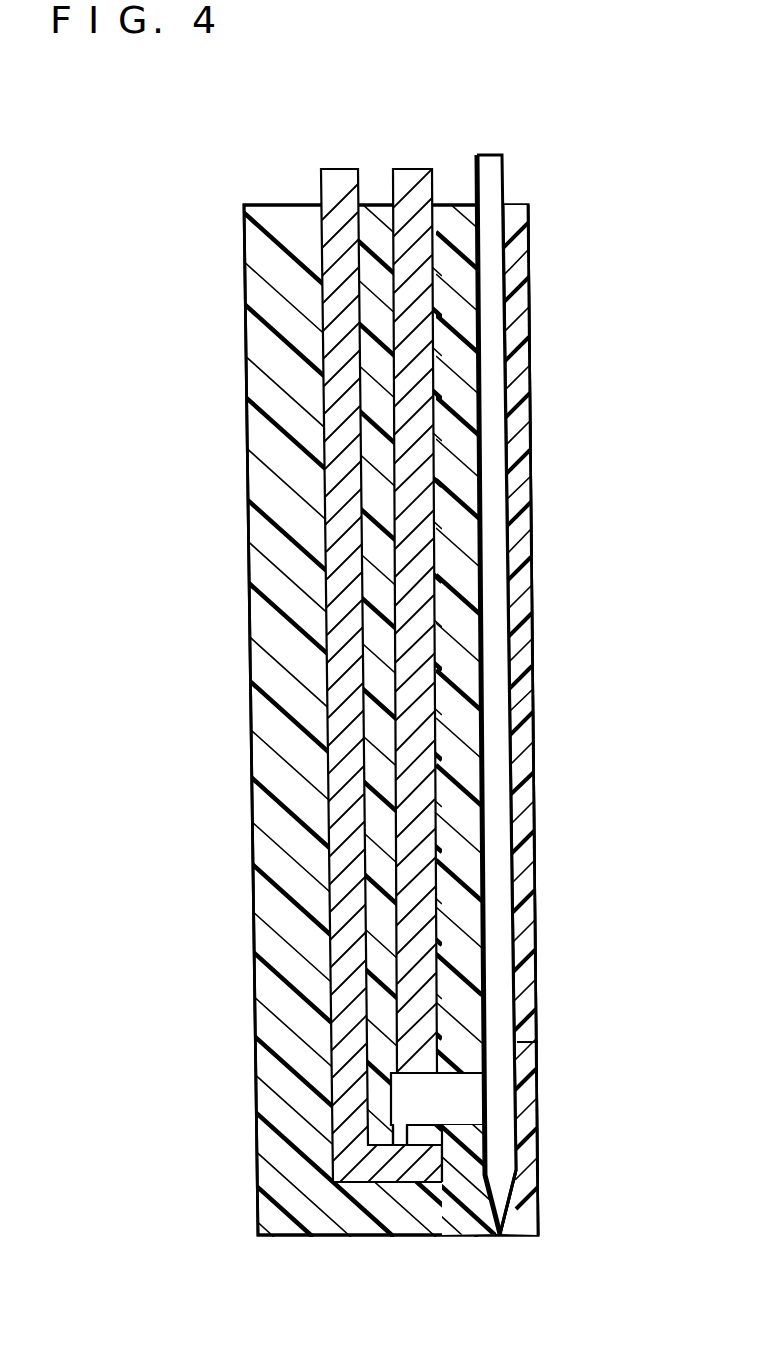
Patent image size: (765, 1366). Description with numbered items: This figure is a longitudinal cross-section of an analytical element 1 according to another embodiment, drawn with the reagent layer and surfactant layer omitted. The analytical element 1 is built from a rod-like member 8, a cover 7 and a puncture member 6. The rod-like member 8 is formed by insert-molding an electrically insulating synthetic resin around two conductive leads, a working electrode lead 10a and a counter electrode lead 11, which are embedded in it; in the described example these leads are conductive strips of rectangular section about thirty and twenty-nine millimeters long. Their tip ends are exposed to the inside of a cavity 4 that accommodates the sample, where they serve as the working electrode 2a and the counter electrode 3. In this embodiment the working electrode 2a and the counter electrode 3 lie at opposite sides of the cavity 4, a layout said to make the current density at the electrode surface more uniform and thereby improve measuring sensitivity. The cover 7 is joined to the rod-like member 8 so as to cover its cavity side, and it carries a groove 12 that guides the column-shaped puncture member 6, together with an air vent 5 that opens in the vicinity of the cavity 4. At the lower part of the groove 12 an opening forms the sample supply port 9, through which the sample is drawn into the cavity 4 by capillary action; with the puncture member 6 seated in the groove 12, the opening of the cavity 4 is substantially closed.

The analytical element 1 is at (226, 302).
The terminal connection portion 2a is at (427, 1125).
The counter electrode 3 is at (423, 1076).
The cavity 4 is at (463, 1113).
The air vent 5 is at (528, 1042).
The puncture member 6 is at (492, 155).
The cover 7 is at (520, 683).
The rod-like member 8 is at (282, 450).
The sample supply port 9 is at (488, 1228).
The positive electrode terminal 10a is at (345, 169).
The counter electrode lead 11 is at (418, 169).
The groove 12 is at (507, 317).